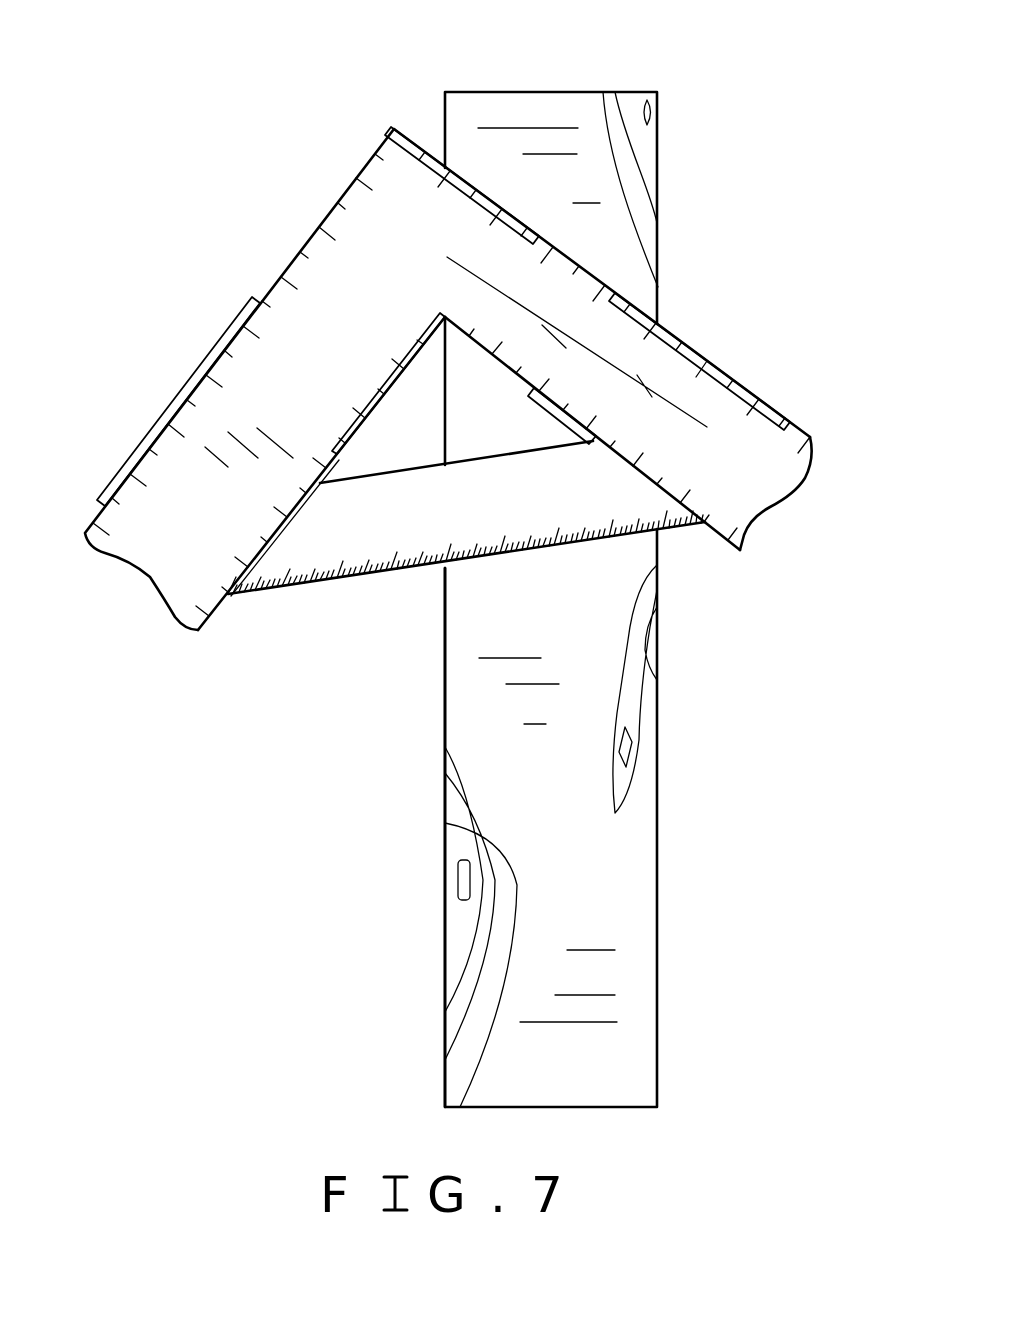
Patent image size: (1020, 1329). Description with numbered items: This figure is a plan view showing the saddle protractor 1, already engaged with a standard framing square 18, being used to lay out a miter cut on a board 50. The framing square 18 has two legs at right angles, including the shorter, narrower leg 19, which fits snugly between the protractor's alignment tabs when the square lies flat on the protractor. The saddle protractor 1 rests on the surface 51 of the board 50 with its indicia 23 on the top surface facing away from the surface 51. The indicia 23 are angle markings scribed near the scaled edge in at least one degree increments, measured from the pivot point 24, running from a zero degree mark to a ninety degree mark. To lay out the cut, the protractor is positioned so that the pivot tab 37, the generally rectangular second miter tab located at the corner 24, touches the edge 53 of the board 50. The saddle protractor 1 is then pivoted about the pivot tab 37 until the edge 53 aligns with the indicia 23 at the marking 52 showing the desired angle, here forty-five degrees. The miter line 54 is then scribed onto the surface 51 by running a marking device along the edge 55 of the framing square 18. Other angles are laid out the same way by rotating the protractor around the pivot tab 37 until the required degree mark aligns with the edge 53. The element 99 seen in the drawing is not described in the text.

The saddle protractor 1 is at (278, 590).
The framing square 18 is at (173, 542).
The shorter, narrower leg 19 is at (677, 430).
The indicia 23 is at (335, 578).
The pivot point 24 is at (420, 388).
The second miter tab 37 is at (395, 370).
The board 50 is at (705, 880).
The surface 51 is at (535, 944).
The marking 52 is at (458, 533).
The edge 53 is at (445, 703).
The miter line 54 is at (497, 345).
The edge 55 is at (787, 443).
The outer lip 99 is at (388, 128).